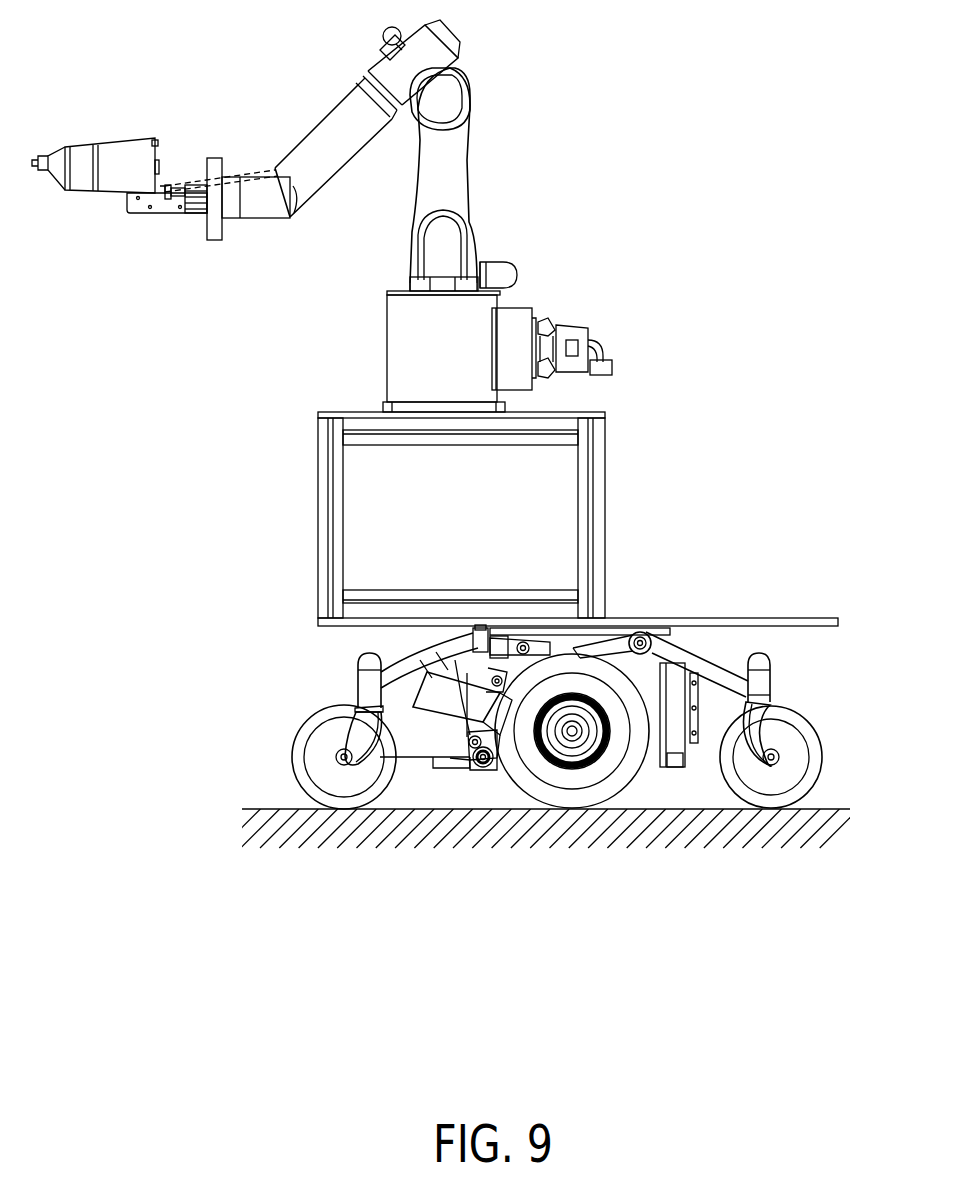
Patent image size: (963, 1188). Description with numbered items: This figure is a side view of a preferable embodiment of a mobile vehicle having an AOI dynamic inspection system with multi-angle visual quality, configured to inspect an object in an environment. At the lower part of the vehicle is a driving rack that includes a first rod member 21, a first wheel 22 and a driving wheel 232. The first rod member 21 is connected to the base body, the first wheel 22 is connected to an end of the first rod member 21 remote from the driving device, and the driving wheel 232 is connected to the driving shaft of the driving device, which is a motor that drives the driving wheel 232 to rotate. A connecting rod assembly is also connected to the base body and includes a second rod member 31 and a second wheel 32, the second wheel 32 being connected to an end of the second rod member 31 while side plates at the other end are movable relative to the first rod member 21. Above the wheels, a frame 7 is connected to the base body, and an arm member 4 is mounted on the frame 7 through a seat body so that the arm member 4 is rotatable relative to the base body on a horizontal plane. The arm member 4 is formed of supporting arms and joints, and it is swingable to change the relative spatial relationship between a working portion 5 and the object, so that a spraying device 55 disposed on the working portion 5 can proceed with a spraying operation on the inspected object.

The arm member 4 is at (482, 172).
The working portion 5 is at (178, 226).
The spraying device 55 is at (127, 150).
The frame 7 is at (600, 532).
The first rod member 21 is at (454, 648).
The first wheel 22 is at (300, 748).
The second rod member 31 is at (725, 673).
The second wheel 32 is at (787, 802).
The driving wheel 232 is at (620, 782).